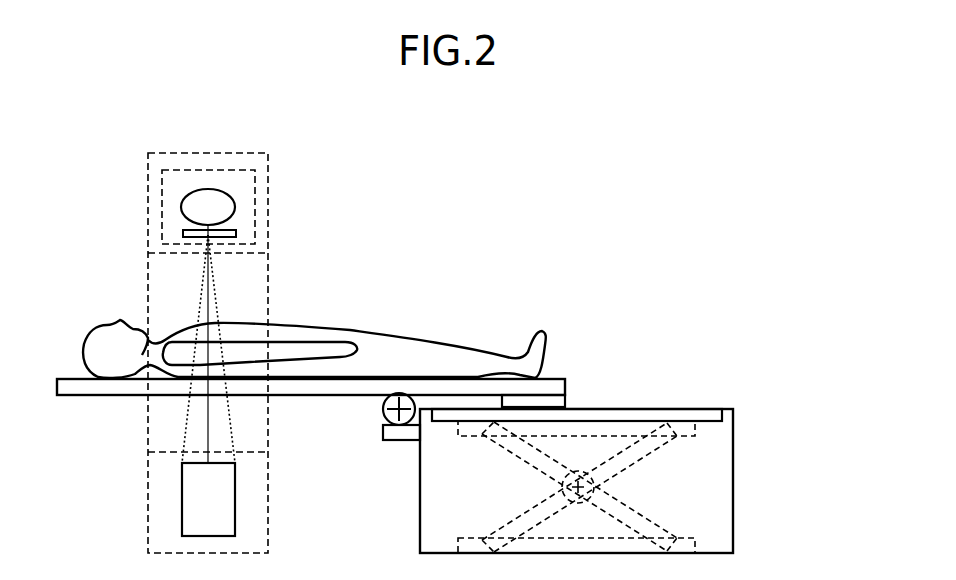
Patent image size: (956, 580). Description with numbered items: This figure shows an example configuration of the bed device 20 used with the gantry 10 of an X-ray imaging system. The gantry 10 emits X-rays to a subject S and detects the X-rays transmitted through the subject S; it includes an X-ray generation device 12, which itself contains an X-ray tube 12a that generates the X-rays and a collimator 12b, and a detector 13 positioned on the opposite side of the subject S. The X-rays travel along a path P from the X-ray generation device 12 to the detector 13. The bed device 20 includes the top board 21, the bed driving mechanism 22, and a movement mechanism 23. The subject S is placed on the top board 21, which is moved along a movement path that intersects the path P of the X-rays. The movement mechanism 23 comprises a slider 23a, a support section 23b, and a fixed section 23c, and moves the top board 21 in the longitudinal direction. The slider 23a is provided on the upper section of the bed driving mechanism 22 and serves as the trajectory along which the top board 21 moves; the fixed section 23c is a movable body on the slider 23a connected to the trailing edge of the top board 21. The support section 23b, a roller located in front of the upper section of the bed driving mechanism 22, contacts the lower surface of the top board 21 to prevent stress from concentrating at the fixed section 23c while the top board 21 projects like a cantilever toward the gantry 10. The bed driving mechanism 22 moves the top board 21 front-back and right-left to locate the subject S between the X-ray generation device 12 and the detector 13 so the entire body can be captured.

The gantry 10 is at (207, 153).
The X-ray generation device 12 is at (255, 176).
The X-ray tube 12a is at (235, 207).
The collimator 12b is at (236, 233).
The path of X-rays P is at (210, 275).
The detector 13 is at (235, 500).
The subject S is at (384, 330).
The top board 21 is at (97, 396).
The bed device 20 is at (734, 479).
The bed driving mechanism 22 is at (623, 513).
The movement mechanism 23 is at (517, 376).
The slider 23a is at (693, 409).
The support section 23b is at (383, 409).
The fixed section 23c is at (567, 402).